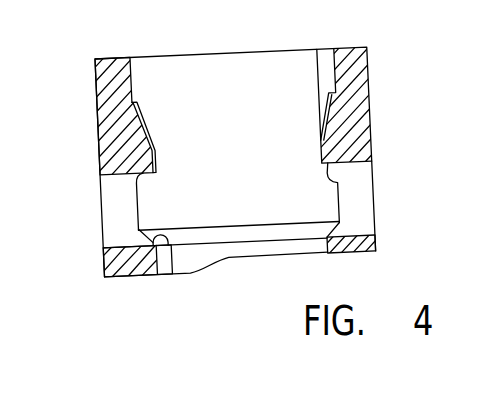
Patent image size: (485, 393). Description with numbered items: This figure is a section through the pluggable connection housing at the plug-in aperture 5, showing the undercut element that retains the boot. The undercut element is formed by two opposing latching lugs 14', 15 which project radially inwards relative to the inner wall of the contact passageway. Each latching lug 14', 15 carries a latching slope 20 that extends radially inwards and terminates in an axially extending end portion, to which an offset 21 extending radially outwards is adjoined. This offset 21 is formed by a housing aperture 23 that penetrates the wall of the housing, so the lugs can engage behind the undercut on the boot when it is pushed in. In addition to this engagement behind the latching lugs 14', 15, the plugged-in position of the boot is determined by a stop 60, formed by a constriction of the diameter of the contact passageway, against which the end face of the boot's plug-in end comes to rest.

The plug-in aperture 5 is at (237, 93).
The latching lug 14' is at (345, 86).
The latching lug 15 is at (162, 131).
The latching slope 20 is at (157, 110).
The offset 21 is at (137, 191).
The housing aperture 23 is at (118, 222).
The stop 60 is at (168, 236).